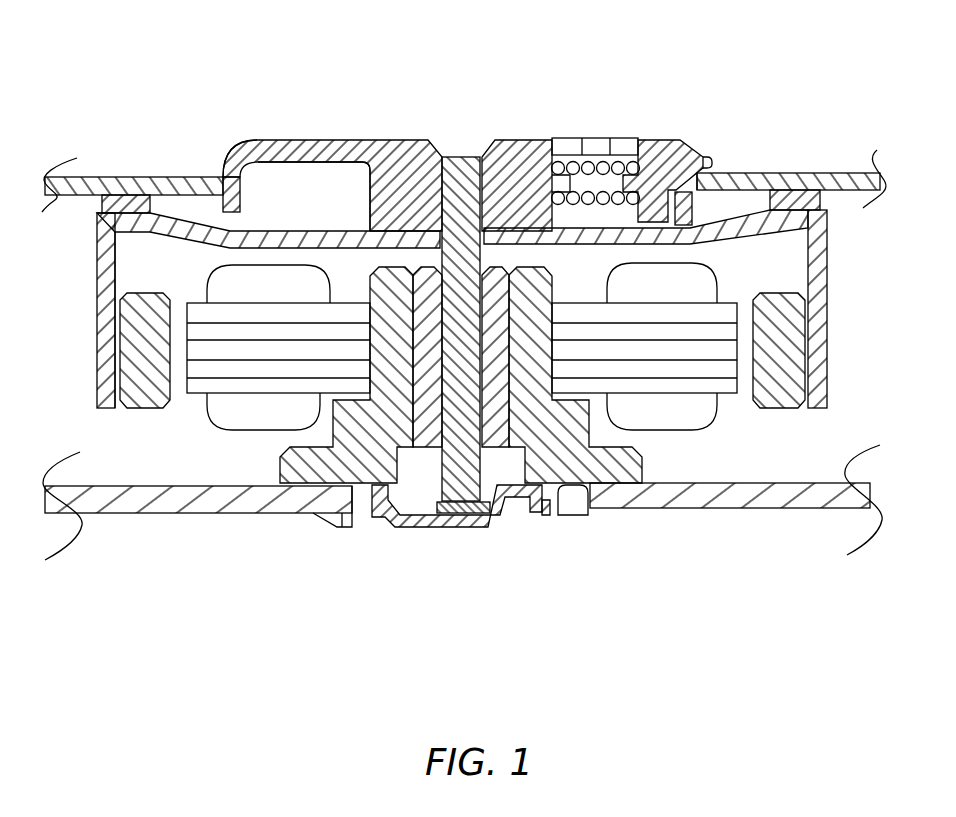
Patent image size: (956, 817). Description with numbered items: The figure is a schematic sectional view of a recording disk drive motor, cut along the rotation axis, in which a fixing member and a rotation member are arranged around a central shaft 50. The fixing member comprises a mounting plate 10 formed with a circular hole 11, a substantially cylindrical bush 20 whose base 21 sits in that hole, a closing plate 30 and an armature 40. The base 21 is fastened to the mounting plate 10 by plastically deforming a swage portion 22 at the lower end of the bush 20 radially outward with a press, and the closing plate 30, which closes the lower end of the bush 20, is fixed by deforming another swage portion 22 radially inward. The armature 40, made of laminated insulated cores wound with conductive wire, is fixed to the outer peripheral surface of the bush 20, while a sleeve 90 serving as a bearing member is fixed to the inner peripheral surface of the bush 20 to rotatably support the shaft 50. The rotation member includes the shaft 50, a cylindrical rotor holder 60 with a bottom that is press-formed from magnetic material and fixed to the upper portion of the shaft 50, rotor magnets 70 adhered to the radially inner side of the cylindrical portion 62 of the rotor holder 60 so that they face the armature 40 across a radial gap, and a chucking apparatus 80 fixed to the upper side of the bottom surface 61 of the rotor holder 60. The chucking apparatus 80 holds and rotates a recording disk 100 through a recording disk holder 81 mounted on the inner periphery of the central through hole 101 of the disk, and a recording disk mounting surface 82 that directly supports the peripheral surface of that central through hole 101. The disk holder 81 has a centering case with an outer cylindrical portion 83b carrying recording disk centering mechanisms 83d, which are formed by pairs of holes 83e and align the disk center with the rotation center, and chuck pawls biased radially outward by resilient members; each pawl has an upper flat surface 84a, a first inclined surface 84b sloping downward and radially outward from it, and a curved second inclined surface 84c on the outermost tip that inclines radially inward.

The mounting plate 10 is at (717, 502).
The circular hole 11 is at (565, 497).
The bush 20 is at (247, 514).
The base 21 is at (578, 450).
The swage portion 22 is at (338, 521).
The closing plate 30 is at (438, 514).
The armature 40 is at (728, 427).
The shaft 50 is at (491, 512).
The rotor holder 60 is at (115, 430).
The bottom surface 61 is at (253, 240).
The cylindrical portion 62 is at (108, 316).
The rotor magnet 70 is at (142, 392).
The chucking apparatus 80 is at (504, 126).
The recording disk holder 81 is at (728, 166).
The recording disk mounting surface 82 is at (837, 186).
The outer cylindrical portion 83b is at (705, 216).
The recording disk centering mechanism 83d is at (213, 148).
The hole 83e is at (241, 198).
The flat surface 84a is at (655, 137).
The first inclined surface 84b is at (690, 138).
The second inclined surface 84c is at (707, 155).
The sleeve 90 is at (490, 437).
The recording disk 100 is at (83, 190).
The central through hole 101 is at (246, 173).